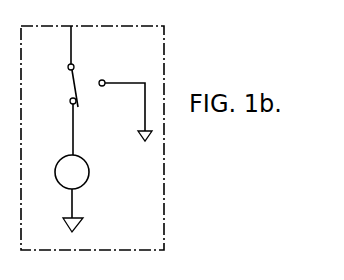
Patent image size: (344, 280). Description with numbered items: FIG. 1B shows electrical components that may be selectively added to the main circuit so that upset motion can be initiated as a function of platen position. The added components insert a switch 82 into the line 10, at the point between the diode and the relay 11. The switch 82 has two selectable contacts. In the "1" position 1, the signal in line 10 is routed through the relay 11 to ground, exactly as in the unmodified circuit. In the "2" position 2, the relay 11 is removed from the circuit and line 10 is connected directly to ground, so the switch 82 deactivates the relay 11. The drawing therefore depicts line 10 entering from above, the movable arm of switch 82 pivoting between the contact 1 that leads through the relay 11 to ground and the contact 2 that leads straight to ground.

The line 10 is at (74, 46).
The switch 82 is at (66, 83).
The "1" position of switch 82 1 is at (64, 106).
The "2" position of switch 82 2 is at (125, 101).
The relay 11 is at (90, 165).